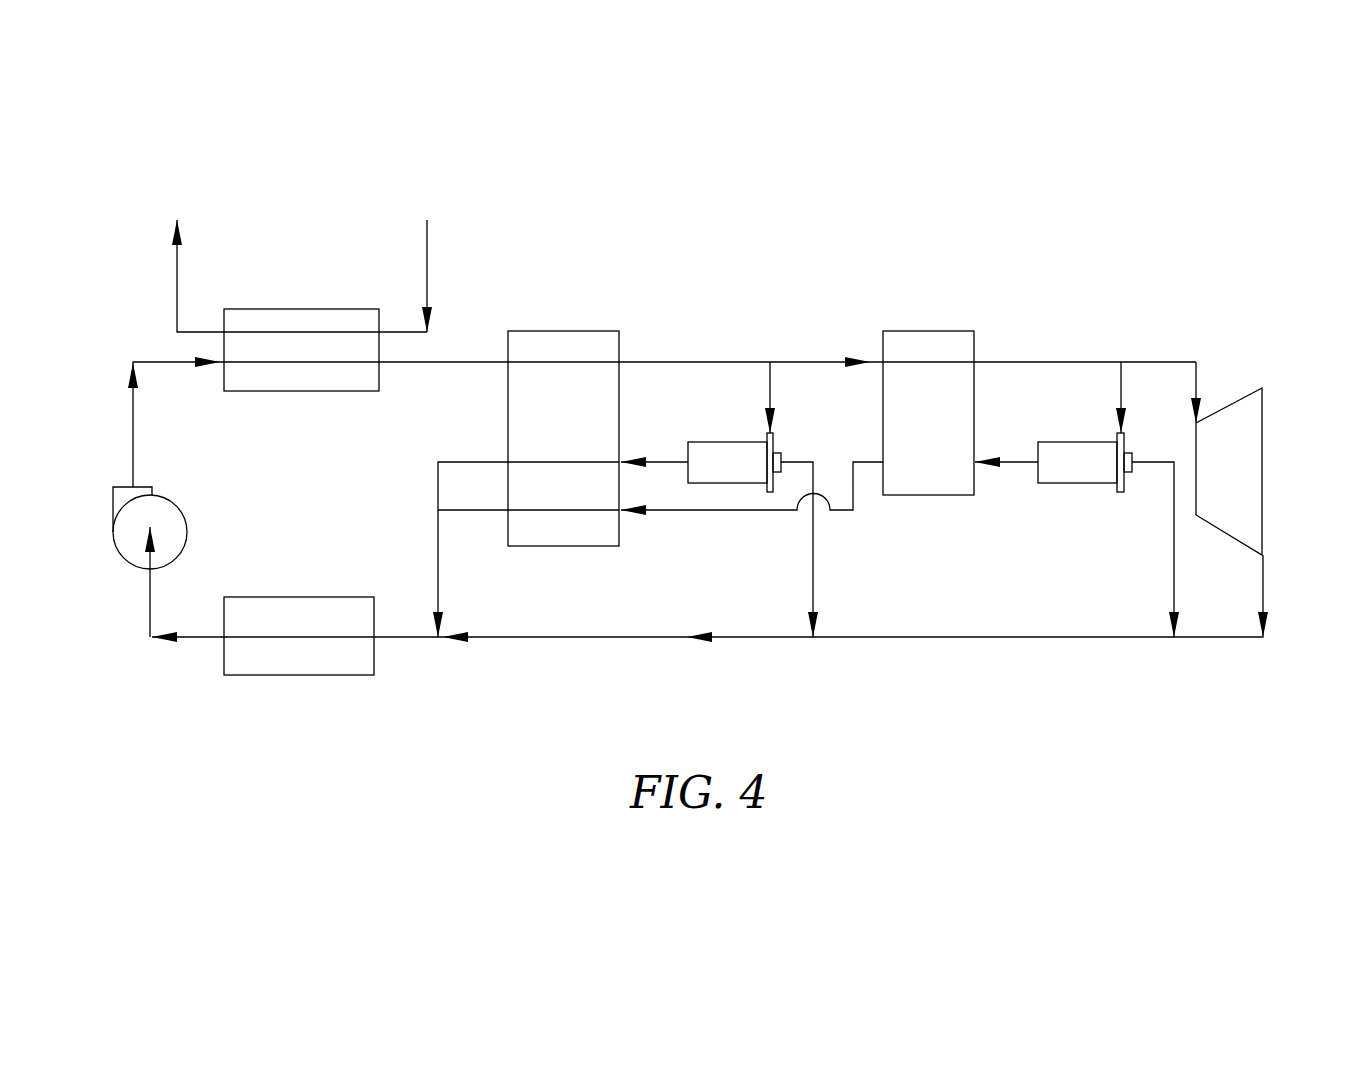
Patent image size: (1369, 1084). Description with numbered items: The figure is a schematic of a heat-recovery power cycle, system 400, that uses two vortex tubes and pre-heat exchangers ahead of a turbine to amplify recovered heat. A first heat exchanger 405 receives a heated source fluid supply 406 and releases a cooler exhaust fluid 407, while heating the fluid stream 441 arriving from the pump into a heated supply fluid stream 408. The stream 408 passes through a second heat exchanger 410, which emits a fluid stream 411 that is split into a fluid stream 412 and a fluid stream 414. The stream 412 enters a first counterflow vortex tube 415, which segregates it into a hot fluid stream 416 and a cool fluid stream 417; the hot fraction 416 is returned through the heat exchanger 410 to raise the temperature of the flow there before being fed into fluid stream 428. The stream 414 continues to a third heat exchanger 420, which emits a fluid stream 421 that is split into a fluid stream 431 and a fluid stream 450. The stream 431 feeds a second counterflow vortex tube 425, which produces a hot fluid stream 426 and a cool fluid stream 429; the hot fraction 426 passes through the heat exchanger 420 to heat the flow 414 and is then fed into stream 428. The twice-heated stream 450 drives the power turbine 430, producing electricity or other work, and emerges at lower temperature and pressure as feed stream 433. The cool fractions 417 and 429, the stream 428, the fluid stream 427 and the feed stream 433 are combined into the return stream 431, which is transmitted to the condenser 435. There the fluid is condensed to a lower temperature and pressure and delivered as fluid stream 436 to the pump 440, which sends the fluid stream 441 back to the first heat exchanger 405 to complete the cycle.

The system 400 is at (800, 200).
The first heat exchanger 405 is at (300, 309).
The heated source fluid supply 406 is at (427, 265).
The cooler exhaust fluid 407 is at (177, 293).
The heated supply fluid stream 408 is at (443, 362).
The second heat exchanger 410 is at (563, 331).
The fluid stream 411 is at (668, 362).
The fluid stream 412 is at (770, 383).
The fluid stream 414 is at (835, 362).
The first counterflow vortex tube 415 is at (727, 442).
The hot fluid stream 416 is at (472, 462).
The cool fluid stream 417 is at (813, 550).
The third heat exchanger 420 is at (928, 331).
The fluid stream 421 is at (1053, 362).
The second counterflow vortex tube 425 is at (1078, 483).
The hot fluid stream 426 is at (472, 513).
The fluid stream 427 is at (893, 637).
The fluid stream 428 is at (437, 578).
The cool fluid stream 429 is at (1174, 550).
The power turbine 430 is at (1263, 472).
The fluid stream 431 is at (1121, 382).
The feed stream 433 is at (1203, 637).
The condenser 435 is at (302, 675).
The fluid stream 436 is at (145, 602).
The pump 440 is at (177, 497).
The fluid stream 441 is at (145, 361).
The fluid stream 450 is at (1160, 362).